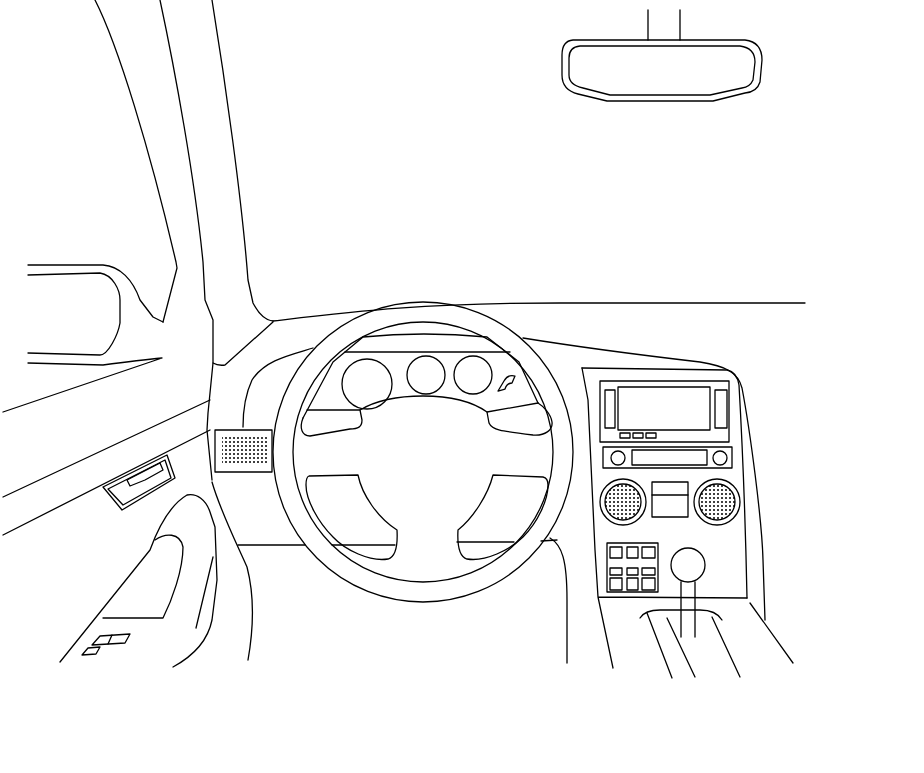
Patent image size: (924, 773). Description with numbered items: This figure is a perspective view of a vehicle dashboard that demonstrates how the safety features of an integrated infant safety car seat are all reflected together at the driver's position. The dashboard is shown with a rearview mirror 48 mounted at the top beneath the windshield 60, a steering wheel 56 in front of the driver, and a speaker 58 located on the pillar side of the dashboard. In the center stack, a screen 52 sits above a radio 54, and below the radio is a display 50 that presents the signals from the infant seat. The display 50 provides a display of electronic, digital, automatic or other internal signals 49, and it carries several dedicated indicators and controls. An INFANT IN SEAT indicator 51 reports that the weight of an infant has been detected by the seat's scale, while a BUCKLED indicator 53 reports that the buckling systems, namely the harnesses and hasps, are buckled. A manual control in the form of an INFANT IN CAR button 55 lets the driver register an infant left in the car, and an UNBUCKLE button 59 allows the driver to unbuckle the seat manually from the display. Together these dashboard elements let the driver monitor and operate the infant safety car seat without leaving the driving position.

The rearview mirror 48 is at (708, 62).
The display of internal signals 49 is at (642, 590).
The display 50 is at (688, 505).
The INFANT IN SEAT indicator 51 is at (608, 552).
The screen 52 is at (708, 411).
The BUCKLED indicator 53 is at (608, 568).
The radio 54 is at (733, 458).
The INFANT IN CAR button 55 is at (608, 575).
The steering wheel 56 is at (356, 573).
The speaker 58 is at (248, 468).
The UNBUCKLE button 59 is at (657, 572).
The windshield 60 is at (700, 196).